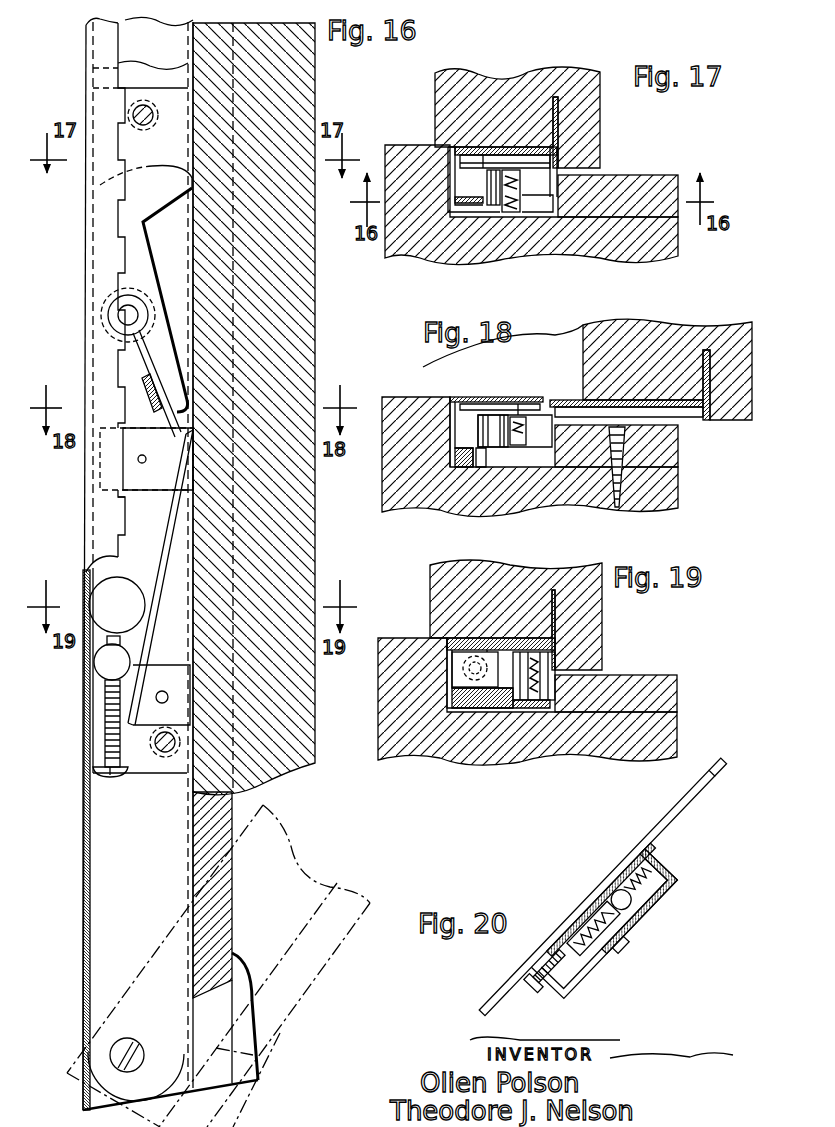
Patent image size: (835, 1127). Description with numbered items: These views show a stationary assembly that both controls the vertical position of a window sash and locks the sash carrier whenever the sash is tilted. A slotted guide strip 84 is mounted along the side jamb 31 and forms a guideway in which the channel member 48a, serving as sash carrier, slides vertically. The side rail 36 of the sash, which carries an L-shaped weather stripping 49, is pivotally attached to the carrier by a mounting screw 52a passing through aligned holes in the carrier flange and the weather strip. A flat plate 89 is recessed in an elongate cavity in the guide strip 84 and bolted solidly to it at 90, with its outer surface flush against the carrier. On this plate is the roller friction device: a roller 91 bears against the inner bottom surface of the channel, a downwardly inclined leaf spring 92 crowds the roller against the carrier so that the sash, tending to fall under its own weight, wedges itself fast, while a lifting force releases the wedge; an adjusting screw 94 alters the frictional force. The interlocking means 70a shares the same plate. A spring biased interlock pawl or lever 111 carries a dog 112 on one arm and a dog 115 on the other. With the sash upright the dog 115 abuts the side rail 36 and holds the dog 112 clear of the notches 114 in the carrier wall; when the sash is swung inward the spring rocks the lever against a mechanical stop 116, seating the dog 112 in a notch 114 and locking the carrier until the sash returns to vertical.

In FIG. 17, the side jamb 31 is at (678, 247).
In FIG. 18, the side jamb 31 is at (672, 493).
In FIG. 19, the side jamb 31 is at (487, 753).
In FIG. 16, the side rail 36 is at (230, 880).
In FIG. 17, the side rail 36 is at (595, 104).
In FIG. 18, the side rail 36 is at (667, 369).
In FIG. 19, the side rail 36 is at (600, 605).
In FIG. 16, the channel member 48a is at (103, 512).
In FIG. 17, the channel member 48a is at (447, 147).
In FIG. 18, the channel member 48a is at (447, 415).
In FIG. 19, the channel member 48a is at (445, 658).
In FIG. 17, the weather stripping 49 is at (553, 118).
In FIG. 18, the weather stripping 49 is at (695, 417).
In FIG. 19, the weather stripping 49 is at (551, 615).
In FIG. 16, the mounting screw 52a is at (120, 1045).
In FIG. 16, the interlocking means 70a is at (110, 386).
In FIG. 16, the guide strip 84 is at (312, 309).
In FIG. 17, the guide strip 84 is at (662, 186).
In FIG. 18, the guide strip 84 is at (672, 455).
In FIG. 19, the guide strip 84 is at (657, 678).
In FIG. 16, the flat plate 89 is at (162, 758).
In FIG. 17, the flat plate 89 is at (483, 150).
In FIG. 18, the flat plate 89 is at (518, 413).
In FIG. 19, the flat plate 89 is at (487, 642).
In FIG. 16, the bolt 90 is at (150, 760).
In FIG. 19, the bolt 90 is at (552, 686).
In FIG. 16, the roller 91 is at (120, 585).
In FIG. 18, the roller 91 is at (493, 443).
In FIG. 19, the roller 91 is at (450, 680).
In FIG. 16, the leaf spring 92 is at (160, 553).
In FIG. 18, the leaf spring 92 is at (542, 447).
In FIG. 19, the leaf spring 92 is at (503, 702).
In FIG. 16, the adjusting screw 94 is at (110, 730).
In FIG. 16, the interlock pawl or lever 111 is at (130, 282).
In FIG. 16, the dog 112 is at (146, 459).
In FIG. 17, the dog 112 is at (514, 215).
In FIG. 18, the dog 112 is at (477, 463).
In FIG. 16, the notch 114 is at (125, 470).
In FIG. 17, the notch 114 is at (487, 210).
In FIG. 18, the notch 114 is at (483, 465).
In FIG. 16, the dog 115 is at (170, 170).
In FIG. 17, the dog 115 is at (560, 163).
In FIG. 16, the mechanical stop 116 is at (180, 248).